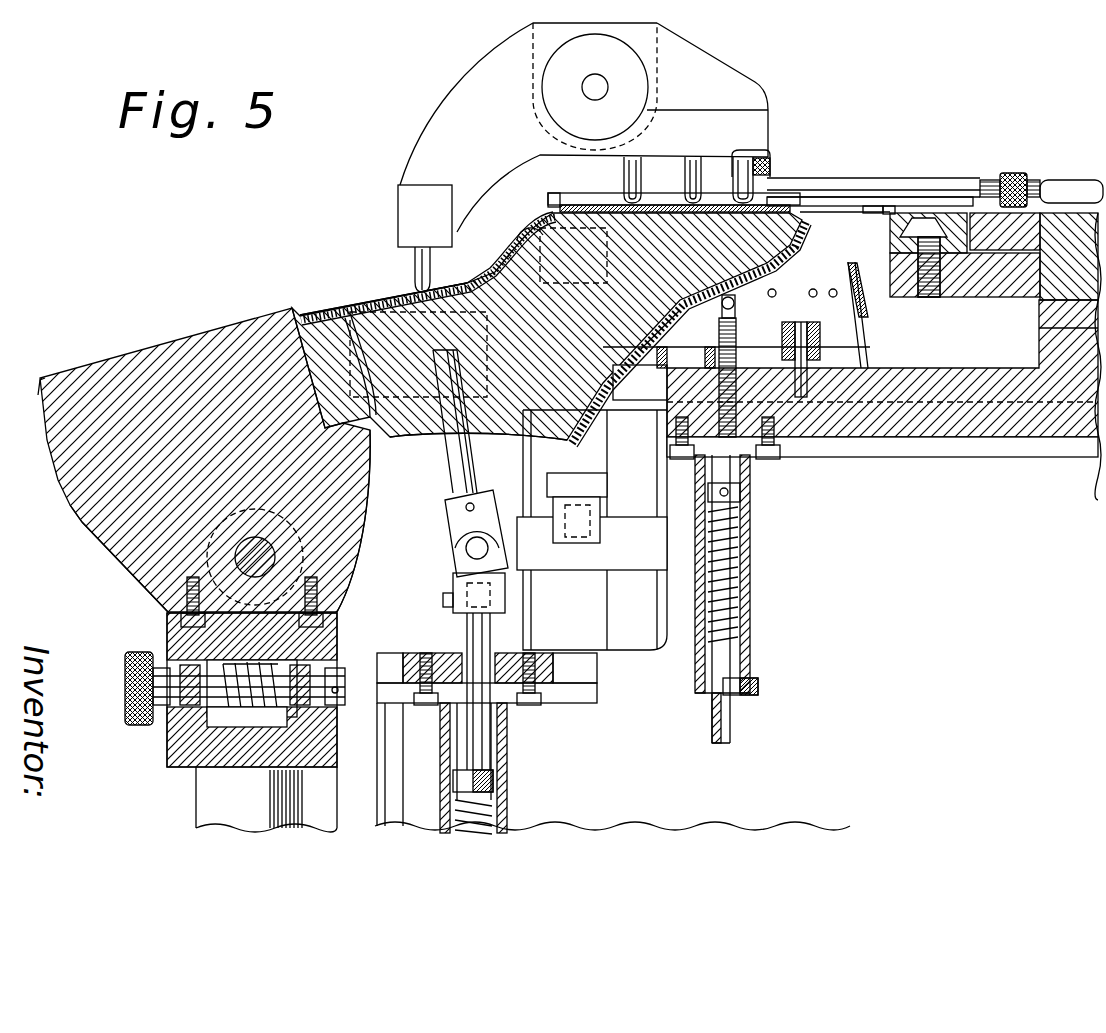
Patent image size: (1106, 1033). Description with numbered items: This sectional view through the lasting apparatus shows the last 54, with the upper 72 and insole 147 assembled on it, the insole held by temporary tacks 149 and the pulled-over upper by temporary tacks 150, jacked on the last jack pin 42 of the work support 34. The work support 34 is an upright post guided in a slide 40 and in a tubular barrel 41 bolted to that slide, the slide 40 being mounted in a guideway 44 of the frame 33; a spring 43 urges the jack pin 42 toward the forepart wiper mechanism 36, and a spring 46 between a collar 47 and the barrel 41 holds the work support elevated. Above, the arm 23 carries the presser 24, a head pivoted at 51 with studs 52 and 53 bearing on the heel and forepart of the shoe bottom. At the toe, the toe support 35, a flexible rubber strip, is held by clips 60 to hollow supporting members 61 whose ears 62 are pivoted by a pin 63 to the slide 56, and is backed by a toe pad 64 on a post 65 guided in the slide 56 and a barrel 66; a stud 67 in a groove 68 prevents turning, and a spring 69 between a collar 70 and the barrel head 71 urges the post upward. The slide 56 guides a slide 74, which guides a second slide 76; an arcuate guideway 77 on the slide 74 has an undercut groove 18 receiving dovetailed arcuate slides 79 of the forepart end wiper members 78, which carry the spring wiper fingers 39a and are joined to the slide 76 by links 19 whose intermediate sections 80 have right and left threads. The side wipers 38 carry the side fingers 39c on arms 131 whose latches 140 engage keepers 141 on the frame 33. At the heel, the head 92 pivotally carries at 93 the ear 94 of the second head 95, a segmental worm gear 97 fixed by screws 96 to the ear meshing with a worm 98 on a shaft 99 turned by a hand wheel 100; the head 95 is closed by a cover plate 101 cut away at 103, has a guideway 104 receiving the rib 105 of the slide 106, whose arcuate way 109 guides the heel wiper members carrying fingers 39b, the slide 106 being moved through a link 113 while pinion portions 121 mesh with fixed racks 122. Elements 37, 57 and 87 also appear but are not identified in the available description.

The undercut arcuate groove 18 is at (930, 222).
The link 19 is at (827, 190).
The arm 23 is at (655, 29).
The presser 24 is at (487, 107).
The frame 33 is at (673, 642).
The work support 34 is at (467, 618).
The toe support 35 is at (764, 283).
The forepart wiper mechanism 36 is at (840, 177).
The bar 37 is at (203, 307).
The side wipers 38 is at (527, 227).
The spring wiper fingers 39a is at (585, 197).
The spring wiper fingers 39b is at (430, 292).
The side spring wiper fingers 39c is at (500, 248).
The slide 40 is at (458, 667).
The tubular barrel 41 is at (503, 790).
The last jack pin 42 is at (472, 483).
The spring 43 is at (452, 557).
The guideway 44 is at (572, 695).
The spring 46 is at (500, 814).
The collar 47 is at (500, 775).
The pivot 51 is at (594, 86).
The stud 52 is at (415, 268).
The stud 53 is at (733, 157).
The last 54 is at (415, 440).
The slide 56 is at (887, 417).
The plate 57 is at (953, 454).
The clips 60 is at (864, 308).
The hollow supporting members 61 is at (870, 351).
The ears 62 is at (787, 330).
The pin 63 is at (806, 375).
The toe pad 64 is at (688, 308).
The post 65 is at (727, 402).
The barrel 66 is at (752, 562).
The stud 67 is at (740, 695).
The groove 68 is at (730, 728).
The spring 69 is at (738, 616).
The collar 70 is at (741, 491).
The head 71 is at (705, 697).
The upper 72 is at (620, 413).
The slide 74 is at (977, 285).
The second slide 76 is at (980, 233).
The arcuate guideway 77 is at (903, 215).
The forepart end wiper members 78 is at (865, 205).
The dovetailed arcuate slides 79 is at (887, 205).
The intermediate section 80 is at (1017, 170).
The base 87 is at (210, 790).
The head 92 is at (180, 740).
The pivot 93 is at (257, 548).
The ear 94 is at (143, 547).
The second head 95 is at (80, 518).
The screws 96 is at (180, 592).
The segmental worm gear 97 is at (303, 643).
The worm 98 is at (220, 663).
The shaft 99 is at (307, 687).
The hand wheel 100 is at (127, 687).
The cover plate 101 is at (97, 347).
The cut-away 103 is at (310, 283).
The longitudinal guideway 104 is at (73, 513).
The rib 105 is at (137, 478).
The slide 106 is at (57, 460).
The arcuate way 109 is at (247, 357).
The link 113 is at (57, 427).
The segmental portions 121 is at (270, 317).
The fixed racks 122 is at (203, 393).
The arms 131 is at (600, 443).
The latches 140 is at (578, 520).
The keepers 141 is at (630, 548).
The insole 147 is at (490, 287).
The temporary tacks 149 is at (660, 203).
The temporary tacks 150 is at (342, 430).